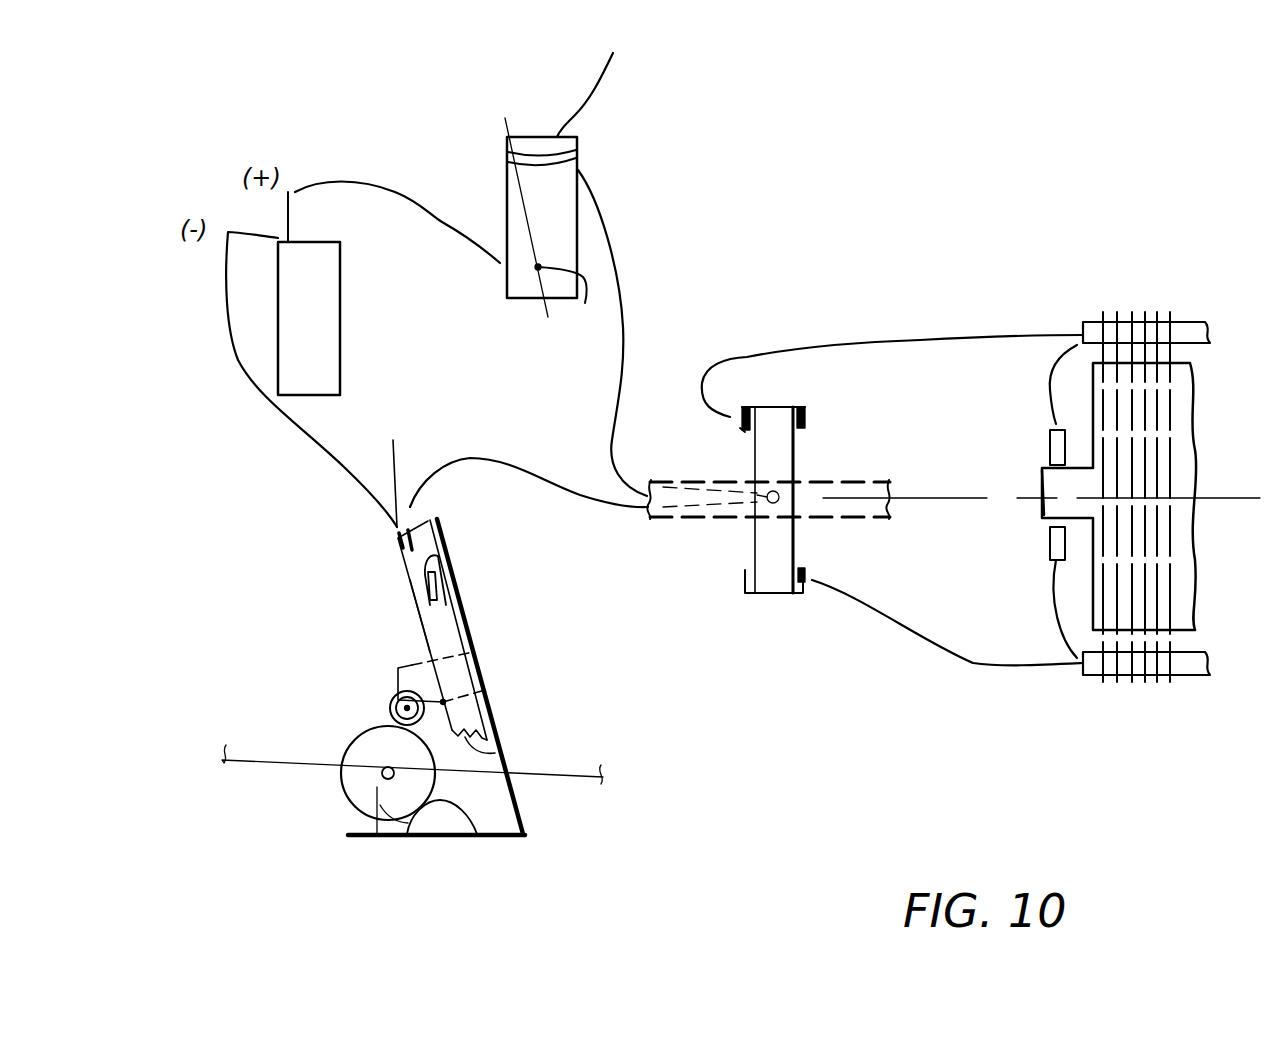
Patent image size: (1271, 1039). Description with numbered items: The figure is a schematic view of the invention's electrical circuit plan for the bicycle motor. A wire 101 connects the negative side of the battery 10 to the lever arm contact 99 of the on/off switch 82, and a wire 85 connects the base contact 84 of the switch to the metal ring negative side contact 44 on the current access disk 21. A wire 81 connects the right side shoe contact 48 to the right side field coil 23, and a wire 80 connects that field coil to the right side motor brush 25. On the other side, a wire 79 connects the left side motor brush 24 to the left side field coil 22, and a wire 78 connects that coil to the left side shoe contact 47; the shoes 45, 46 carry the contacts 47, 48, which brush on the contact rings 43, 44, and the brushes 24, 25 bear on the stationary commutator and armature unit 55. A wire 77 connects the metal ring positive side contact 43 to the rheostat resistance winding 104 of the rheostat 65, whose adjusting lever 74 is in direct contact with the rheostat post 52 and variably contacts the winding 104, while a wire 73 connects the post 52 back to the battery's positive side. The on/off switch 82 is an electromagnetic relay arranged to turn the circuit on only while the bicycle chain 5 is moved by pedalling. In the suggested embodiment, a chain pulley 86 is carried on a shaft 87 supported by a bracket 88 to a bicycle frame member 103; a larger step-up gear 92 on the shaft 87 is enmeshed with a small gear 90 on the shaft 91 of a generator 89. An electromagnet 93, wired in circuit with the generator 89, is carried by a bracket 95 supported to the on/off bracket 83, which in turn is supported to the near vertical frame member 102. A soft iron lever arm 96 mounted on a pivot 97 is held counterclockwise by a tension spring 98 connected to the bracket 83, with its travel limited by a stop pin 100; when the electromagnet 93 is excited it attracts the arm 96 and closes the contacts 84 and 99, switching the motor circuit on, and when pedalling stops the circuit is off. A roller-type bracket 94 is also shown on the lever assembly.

The bicycle chain 5 is at (247, 757).
The battery 10 is at (341, 337).
The current access disk 21 is at (797, 612).
The left side field coil 22 is at (1088, 322).
The right side field coil 23 is at (1100, 678).
The left side motor brush 24 is at (1050, 445).
The right side motor brush 25 is at (1050, 545).
The metal ring positive side contact 43 is at (753, 528).
The metal ring negative side contact 44 is at (797, 455).
The contact shoe 45 is at (805, 390).
The contact shoe 46 is at (768, 600).
The left side shoe contact 47 is at (740, 428).
The right side shoe contact 48 is at (805, 572).
The rheostat post 52 is at (571, 305).
The commutator and armature unit 55 is at (1032, 470).
The rheostat 65 is at (590, 142).
The wire 73 is at (442, 222).
The rheostat adjusting lever 74 is at (547, 311).
The wire 77 is at (625, 327).
The wire 78 is at (896, 337).
The wire 79 is at (1046, 378).
The wire 80 is at (1058, 620).
The wire 81 is at (973, 663).
The on/off switch 82 is at (337, 648).
The on/off bracket 83 is at (468, 630).
The base contact 84 is at (393, 440).
The wire 85 is at (587, 467).
The chain pulley 86 is at (385, 775).
The shaft 87 is at (385, 774).
The bracket 88 is at (407, 838).
The generator 89 is at (380, 684).
The small gear 90 is at (405, 708).
The generator shaft 91 is at (395, 715).
The step-up gear 92 is at (477, 836).
The electromagnet 93 is at (437, 558).
The roller bracket 94 is at (422, 664).
The bracket 95 is at (463, 613).
The lever arm 96 is at (422, 613).
The pivot 97 is at (483, 682).
The tension spring 98 is at (503, 753).
The lever arm contact 99 is at (397, 540).
The stop pin 100 is at (403, 590).
The wire 101 is at (262, 405).
The near vertical bicycle frame member 102 is at (490, 707).
The bicycle frame member 103 is at (515, 838).
The rheostat resistance winding 104 is at (585, 85).